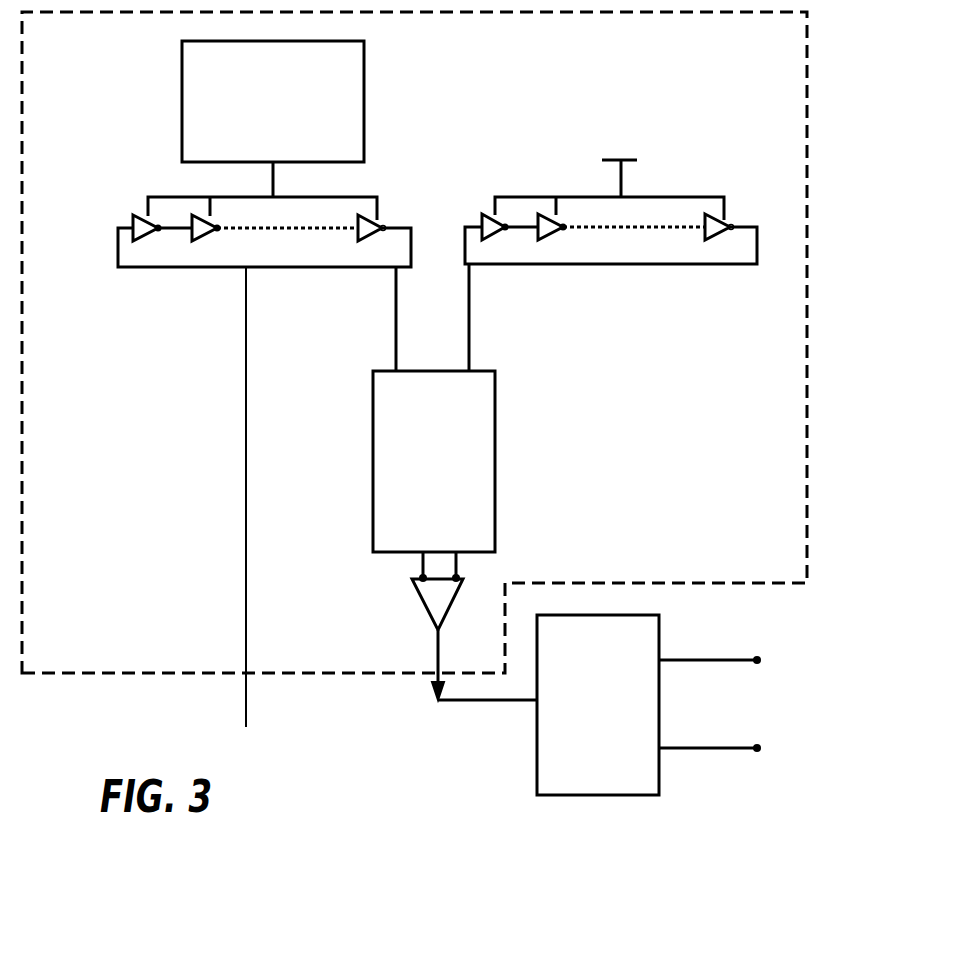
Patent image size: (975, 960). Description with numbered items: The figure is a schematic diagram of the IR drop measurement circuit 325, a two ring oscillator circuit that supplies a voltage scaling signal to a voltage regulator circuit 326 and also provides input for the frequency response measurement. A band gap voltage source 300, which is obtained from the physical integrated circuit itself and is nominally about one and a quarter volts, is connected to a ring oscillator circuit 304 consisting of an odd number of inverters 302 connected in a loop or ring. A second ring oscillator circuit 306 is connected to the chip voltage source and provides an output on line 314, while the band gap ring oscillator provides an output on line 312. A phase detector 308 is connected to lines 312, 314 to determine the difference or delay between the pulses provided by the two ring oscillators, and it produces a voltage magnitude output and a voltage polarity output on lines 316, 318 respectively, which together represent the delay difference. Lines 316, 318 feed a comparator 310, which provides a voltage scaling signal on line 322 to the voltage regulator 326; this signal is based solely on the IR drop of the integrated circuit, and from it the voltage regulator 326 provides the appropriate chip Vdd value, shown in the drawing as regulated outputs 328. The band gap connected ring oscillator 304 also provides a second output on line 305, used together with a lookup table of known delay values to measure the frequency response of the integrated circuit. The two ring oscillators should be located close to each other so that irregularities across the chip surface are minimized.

The band gap voltage source 300 is at (177, 79).
The inverters 302 is at (135, 218).
The ring oscillator circuit 304 is at (256, 256).
The line 305 is at (240, 445).
The second ring oscillator circuit 306 is at (610, 270).
The phase detector 308 is at (434, 461).
The comparator 310 is at (423, 605).
The line 312 is at (396, 342).
The line 314 is at (469, 333).
The line 316 is at (421, 568).
The line 318 is at (460, 566).
The line 322 is at (471, 704).
The IR drop measurement circuit 325 is at (414, 342).
The voltage regulator circuit 326 is at (598, 705).
The regulated supply outputs 328 is at (765, 648).